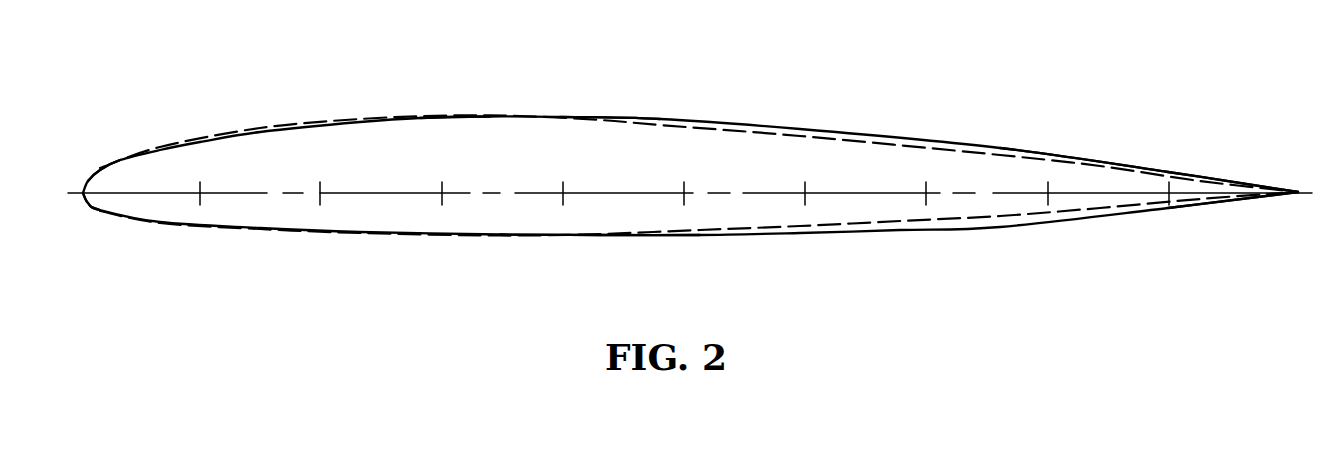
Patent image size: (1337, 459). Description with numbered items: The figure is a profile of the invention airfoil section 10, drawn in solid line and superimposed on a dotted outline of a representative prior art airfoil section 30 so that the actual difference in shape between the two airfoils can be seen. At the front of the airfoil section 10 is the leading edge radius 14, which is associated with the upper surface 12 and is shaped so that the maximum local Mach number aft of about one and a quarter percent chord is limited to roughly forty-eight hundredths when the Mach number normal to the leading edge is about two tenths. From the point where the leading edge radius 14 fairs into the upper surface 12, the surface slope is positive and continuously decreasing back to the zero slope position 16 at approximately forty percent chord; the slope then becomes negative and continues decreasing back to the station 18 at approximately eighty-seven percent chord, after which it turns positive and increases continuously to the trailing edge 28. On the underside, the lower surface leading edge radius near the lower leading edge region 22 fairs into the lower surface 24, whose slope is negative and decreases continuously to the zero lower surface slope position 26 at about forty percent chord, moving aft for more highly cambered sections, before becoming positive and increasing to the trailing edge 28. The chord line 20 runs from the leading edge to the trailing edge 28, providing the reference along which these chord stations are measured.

The airfoil section 10 is at (513, 106).
The upper surface 12 is at (472, 113).
The leading edge radius 14 is at (101, 170).
The 40 percent chord station 16 is at (569, 115).
The 87 percent chord station 18 is at (1133, 168).
The chord line 20 is at (610, 192).
The lower leading edge portion 22 is at (84, 198).
The lower surface 24 is at (578, 236).
The zero lower surface slope position 26 is at (660, 236).
The trailing edge 28 is at (1300, 190).
The prior art airfoil section 30 is at (815, 125).